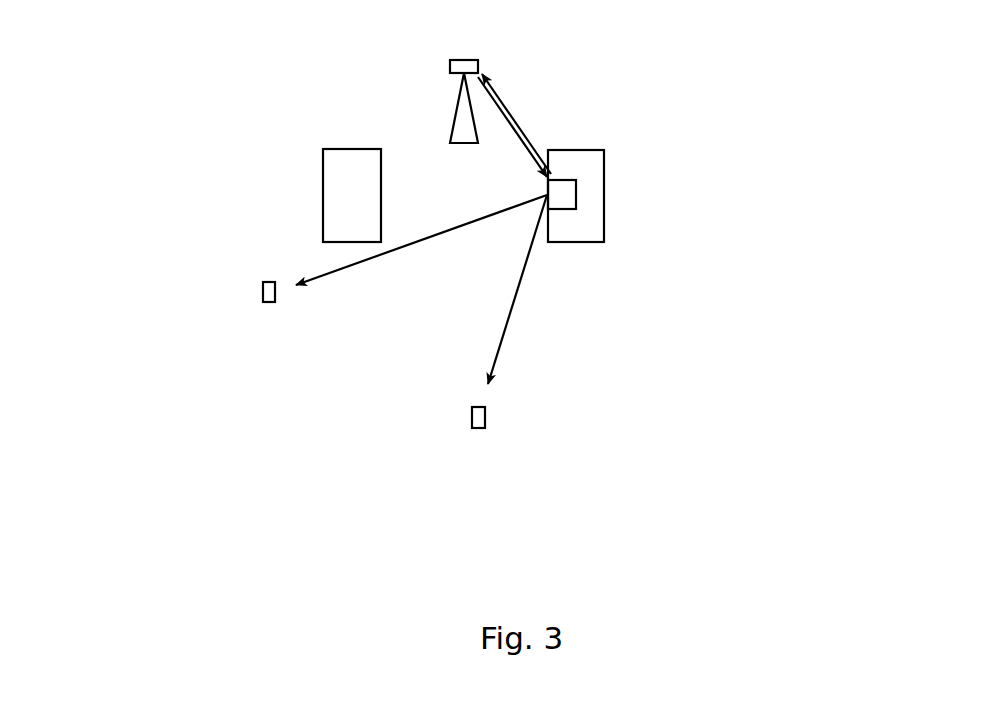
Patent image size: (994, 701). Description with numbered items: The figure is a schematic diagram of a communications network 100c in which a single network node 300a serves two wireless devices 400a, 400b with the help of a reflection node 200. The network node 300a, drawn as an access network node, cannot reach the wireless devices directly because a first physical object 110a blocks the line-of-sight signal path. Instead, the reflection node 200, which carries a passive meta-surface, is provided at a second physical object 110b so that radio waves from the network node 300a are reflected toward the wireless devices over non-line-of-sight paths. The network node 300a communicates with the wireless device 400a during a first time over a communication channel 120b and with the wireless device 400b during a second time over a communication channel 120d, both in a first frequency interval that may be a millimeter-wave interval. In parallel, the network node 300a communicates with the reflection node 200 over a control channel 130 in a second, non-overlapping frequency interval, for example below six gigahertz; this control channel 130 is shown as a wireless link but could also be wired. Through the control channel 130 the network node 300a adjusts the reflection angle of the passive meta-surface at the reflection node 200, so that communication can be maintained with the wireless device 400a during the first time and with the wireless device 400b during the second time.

The communications network 100c is at (158, 57).
The network node 300a is at (450, 62).
The control channel 130 is at (523, 138).
The reflection node 200 is at (577, 193).
The first physical object 110a is at (323, 172).
The physical object 110b is at (573, 242).
The communication channel 120b is at (422, 240).
The communication channel 120d is at (505, 335).
The wireless device 400a is at (263, 303).
The wireless device 400b is at (473, 428).